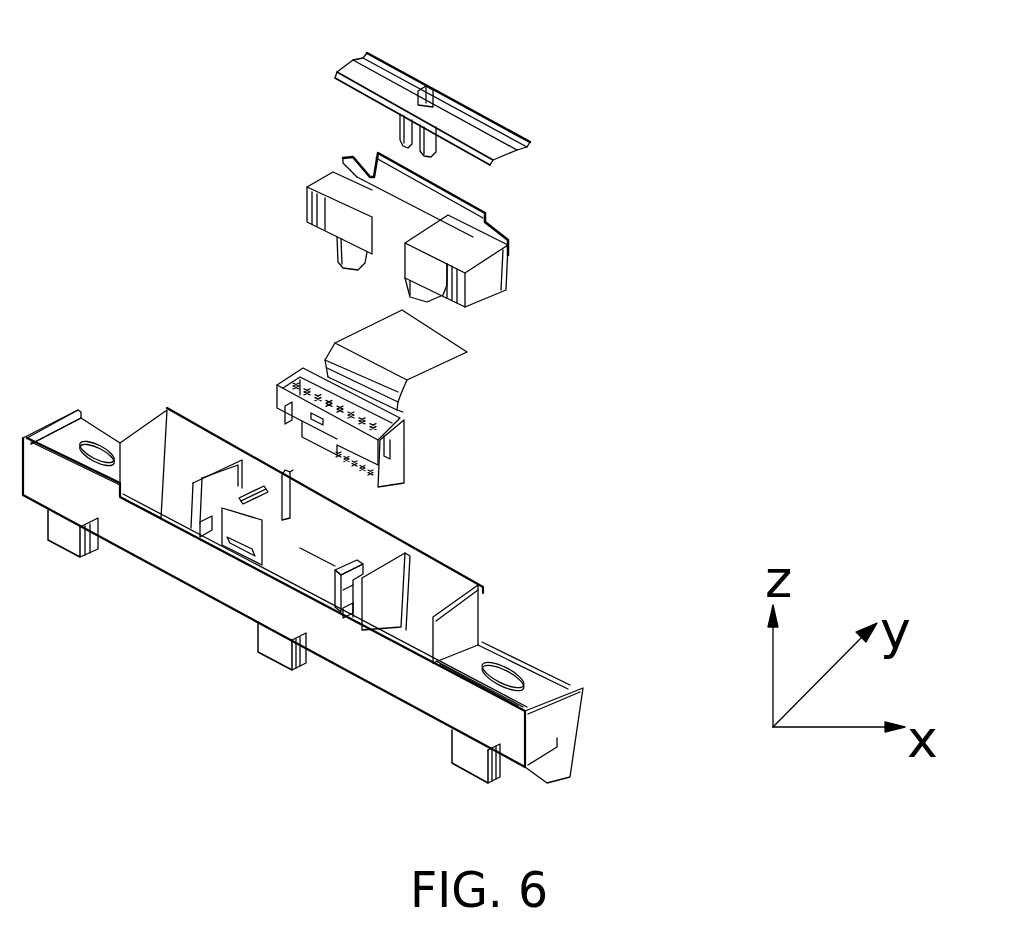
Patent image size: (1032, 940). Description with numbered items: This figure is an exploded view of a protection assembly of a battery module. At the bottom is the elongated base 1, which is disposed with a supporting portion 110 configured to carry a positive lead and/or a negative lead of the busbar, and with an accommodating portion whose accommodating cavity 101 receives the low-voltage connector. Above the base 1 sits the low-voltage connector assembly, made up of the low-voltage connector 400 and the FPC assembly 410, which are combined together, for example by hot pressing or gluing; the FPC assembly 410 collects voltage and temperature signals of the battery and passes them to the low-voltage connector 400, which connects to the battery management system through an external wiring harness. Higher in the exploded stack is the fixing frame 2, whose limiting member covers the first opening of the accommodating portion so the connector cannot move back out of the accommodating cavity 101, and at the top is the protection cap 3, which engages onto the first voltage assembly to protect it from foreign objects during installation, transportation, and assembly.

The base 1 is at (77, 441).
The fixing frame 2 is at (477, 253).
The protection cap 3 is at (465, 135).
The accommodating cavity 101 is at (322, 560).
The supporting portion 110 is at (495, 653).
The low-voltage connector 400 is at (385, 440).
The FPC assembly 410 is at (413, 355).